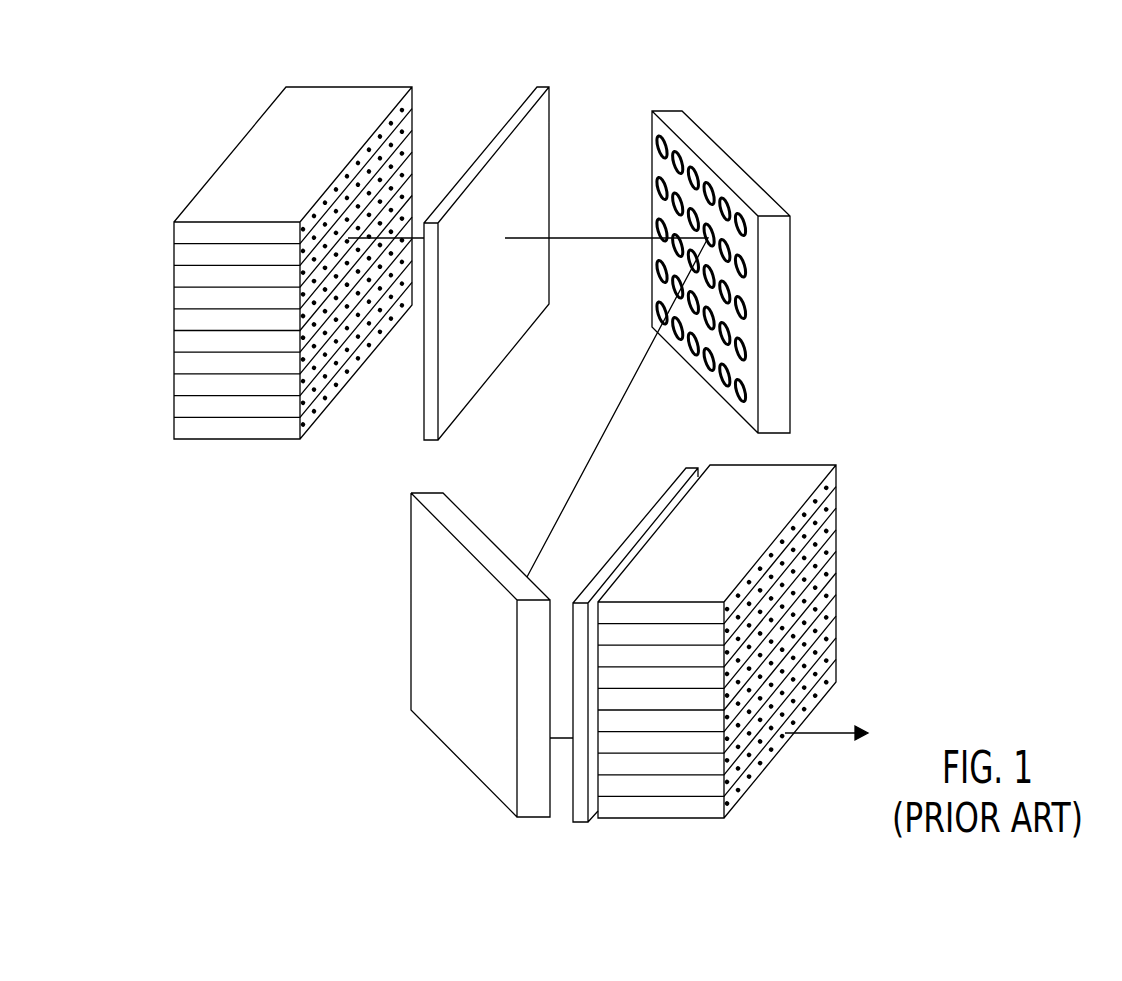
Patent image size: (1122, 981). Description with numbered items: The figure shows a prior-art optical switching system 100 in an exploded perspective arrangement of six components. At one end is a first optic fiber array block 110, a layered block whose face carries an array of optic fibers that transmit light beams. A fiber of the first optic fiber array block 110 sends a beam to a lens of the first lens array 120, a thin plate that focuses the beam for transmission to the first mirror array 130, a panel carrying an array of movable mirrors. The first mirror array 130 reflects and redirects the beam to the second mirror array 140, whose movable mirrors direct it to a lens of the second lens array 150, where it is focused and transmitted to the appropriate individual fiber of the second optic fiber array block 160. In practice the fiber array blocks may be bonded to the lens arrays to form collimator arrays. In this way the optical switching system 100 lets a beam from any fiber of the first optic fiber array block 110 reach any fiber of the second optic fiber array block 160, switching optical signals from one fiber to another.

The optical switching system 100 is at (242, 727).
The first optic fiber array block 110 is at (348, 237).
The first lens array 120 is at (540, 115).
The first mirror array 130 is at (783, 263).
The second mirror array 140 is at (410, 612).
The second lens array 150 is at (688, 465).
The second optic fiber array block 160 is at (807, 472).